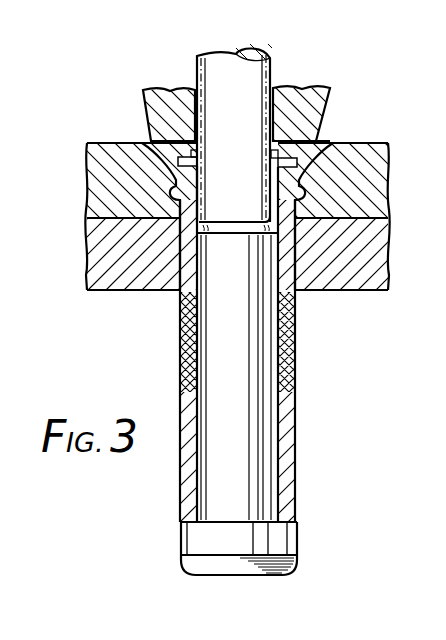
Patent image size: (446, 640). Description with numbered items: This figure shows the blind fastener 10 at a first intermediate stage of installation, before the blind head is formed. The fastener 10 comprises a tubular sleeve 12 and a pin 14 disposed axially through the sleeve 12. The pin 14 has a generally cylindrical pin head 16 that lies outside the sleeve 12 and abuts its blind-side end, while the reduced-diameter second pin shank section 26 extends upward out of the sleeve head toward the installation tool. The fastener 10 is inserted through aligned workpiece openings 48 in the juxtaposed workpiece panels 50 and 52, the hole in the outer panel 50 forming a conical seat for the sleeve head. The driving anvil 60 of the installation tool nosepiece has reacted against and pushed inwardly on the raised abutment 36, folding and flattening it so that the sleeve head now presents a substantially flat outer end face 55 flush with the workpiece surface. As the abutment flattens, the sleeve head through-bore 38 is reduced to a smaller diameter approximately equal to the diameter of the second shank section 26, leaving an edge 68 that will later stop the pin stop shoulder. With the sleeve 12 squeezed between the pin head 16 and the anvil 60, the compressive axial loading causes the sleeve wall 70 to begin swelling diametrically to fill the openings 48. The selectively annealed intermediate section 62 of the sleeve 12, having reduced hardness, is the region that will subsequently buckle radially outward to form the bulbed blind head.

The blind fastener 10 is at (223, 320).
The tubular sleeve 12 is at (223, 320).
The pin 14 is at (252, 409).
The pin head 16 is at (298, 551).
The second pin shank section 26 is at (196, 72).
The raised abutment 36 is at (313, 145).
The sleeve head through-bore 38 is at (199, 148).
The workpiece openings 48 is at (177, 193).
The outer workpiece panel 50 is at (100, 160).
The workpiece panel 52 is at (100, 233).
The flat outer end face of sleeve head 55 is at (162, 132).
The driving anvil 60 is at (305, 88).
The selectively annealed intermediate section 62 is at (173, 390).
The edge of reduced sleeve head bore 68 is at (282, 183).
The sleeve wall 70 is at (290, 482).